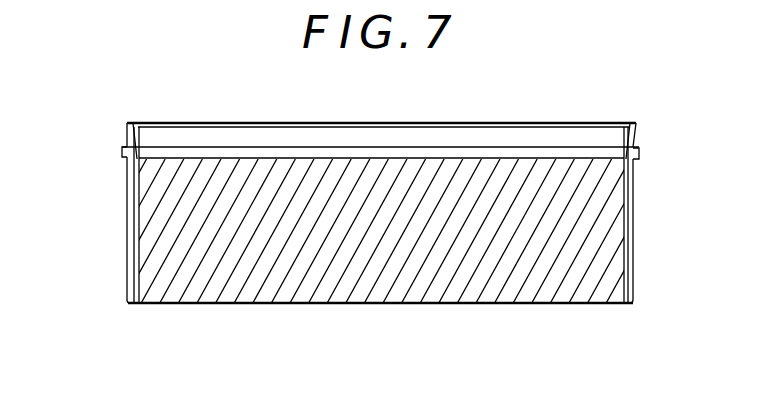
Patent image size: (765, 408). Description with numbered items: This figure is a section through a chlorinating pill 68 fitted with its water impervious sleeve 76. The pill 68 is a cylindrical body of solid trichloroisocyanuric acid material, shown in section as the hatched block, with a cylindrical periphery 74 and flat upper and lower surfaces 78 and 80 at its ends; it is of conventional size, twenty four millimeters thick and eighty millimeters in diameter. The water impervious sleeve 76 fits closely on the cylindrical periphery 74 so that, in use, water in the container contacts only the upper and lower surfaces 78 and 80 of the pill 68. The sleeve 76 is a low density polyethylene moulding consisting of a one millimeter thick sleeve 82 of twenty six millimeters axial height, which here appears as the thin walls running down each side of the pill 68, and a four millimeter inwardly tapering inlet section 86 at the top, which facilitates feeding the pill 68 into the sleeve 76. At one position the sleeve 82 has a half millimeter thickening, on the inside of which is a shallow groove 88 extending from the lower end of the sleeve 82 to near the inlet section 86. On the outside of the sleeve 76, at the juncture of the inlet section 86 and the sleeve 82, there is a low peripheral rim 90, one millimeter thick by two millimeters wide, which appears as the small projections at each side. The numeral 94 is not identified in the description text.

The pill 68 is at (552, 305).
The cylindrical periphery 74 is at (633, 293).
The water impervious sleeve 76 is at (635, 257).
The upper surface 78 is at (512, 152).
The lower surface 80 is at (382, 305).
The sleeve 82 is at (130, 286).
The inlet section 86 is at (197, 135).
The groove 88 is at (125, 227).
The peripheral rim 90 is at (121, 157).
The bottom 94 is at (238, 305).